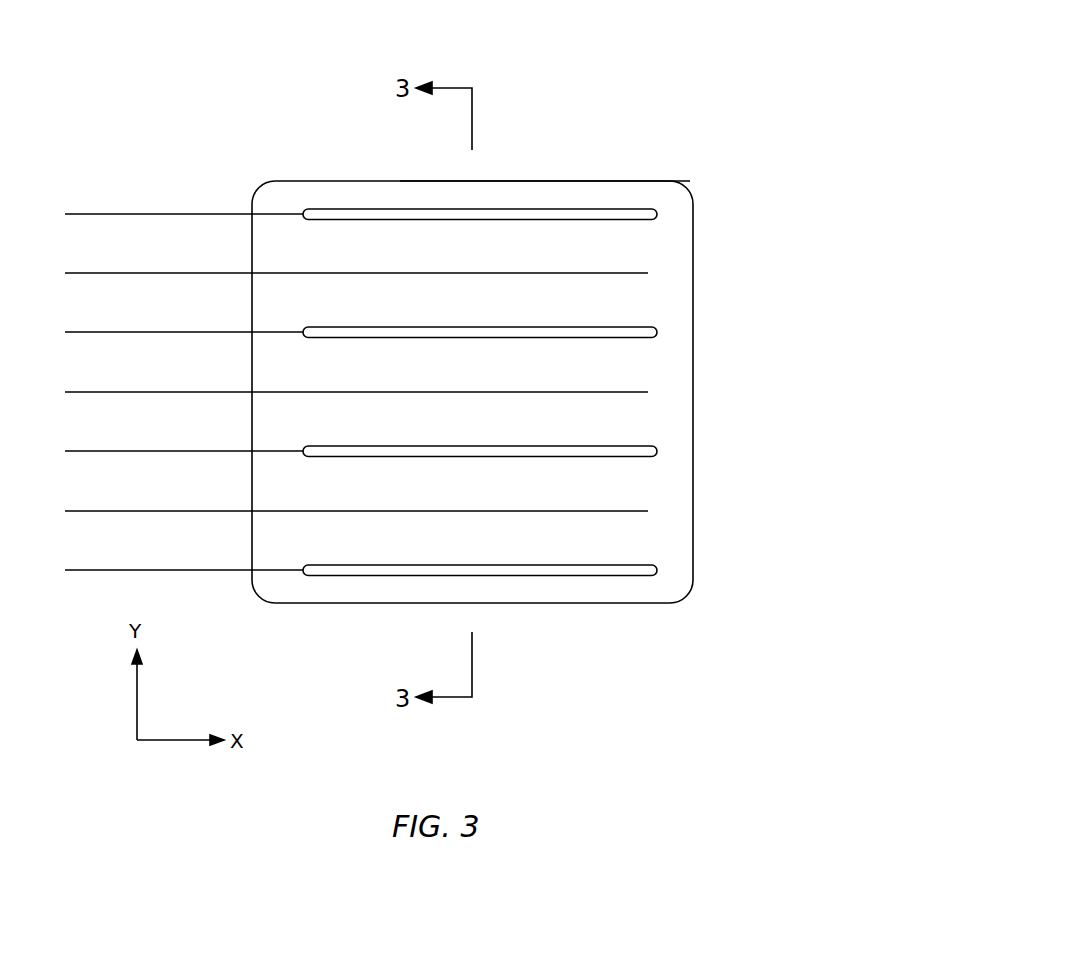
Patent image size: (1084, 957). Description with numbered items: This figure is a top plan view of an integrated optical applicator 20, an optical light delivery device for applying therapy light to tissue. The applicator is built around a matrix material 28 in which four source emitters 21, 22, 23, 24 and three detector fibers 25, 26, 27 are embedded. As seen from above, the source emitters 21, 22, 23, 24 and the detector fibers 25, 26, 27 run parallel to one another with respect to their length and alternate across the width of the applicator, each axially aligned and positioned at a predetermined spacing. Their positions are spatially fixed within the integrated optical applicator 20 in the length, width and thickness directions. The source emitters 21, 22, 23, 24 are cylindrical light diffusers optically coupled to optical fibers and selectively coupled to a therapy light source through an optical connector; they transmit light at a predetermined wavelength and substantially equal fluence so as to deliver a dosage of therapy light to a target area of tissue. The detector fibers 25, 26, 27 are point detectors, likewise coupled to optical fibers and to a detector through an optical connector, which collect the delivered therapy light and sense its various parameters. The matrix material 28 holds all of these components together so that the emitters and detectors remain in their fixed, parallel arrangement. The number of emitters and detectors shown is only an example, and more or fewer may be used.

The integrated optical applicator 20 is at (732, 108).
The source emitter 21 is at (658, 570).
The source emitter 22 is at (658, 451).
The source emitter 23 is at (658, 332).
The source emitter 24 is at (658, 214).
The detector fiber 25 is at (648, 511).
The detector fiber 26 is at (648, 392).
The detector fiber 27 is at (648, 273).
The matrix material 28 is at (605, 192).